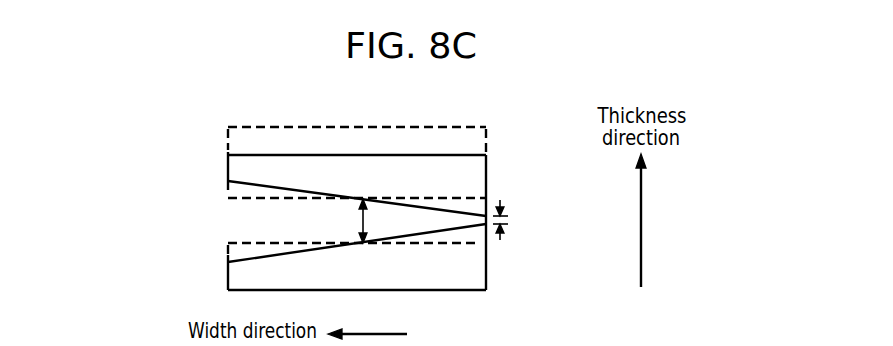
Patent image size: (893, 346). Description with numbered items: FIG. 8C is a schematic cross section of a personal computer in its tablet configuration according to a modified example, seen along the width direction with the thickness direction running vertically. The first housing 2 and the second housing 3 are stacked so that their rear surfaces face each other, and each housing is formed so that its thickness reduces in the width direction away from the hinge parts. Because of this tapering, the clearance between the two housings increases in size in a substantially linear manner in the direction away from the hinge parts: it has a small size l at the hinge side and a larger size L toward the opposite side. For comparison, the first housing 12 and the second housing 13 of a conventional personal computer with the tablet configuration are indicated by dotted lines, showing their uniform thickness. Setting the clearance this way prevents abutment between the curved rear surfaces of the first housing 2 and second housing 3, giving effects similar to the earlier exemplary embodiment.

The second housing of the conventional personal computer 13 is at (326, 126).
The second housing 3 is at (486, 170).
The first housing of the conventional personal computer 12 is at (466, 243).
The first housing 2 is at (486, 275).
The size of clearance at center in width direction L is at (358, 219).
The size of clearance at end near hinge parts l is at (508, 220).